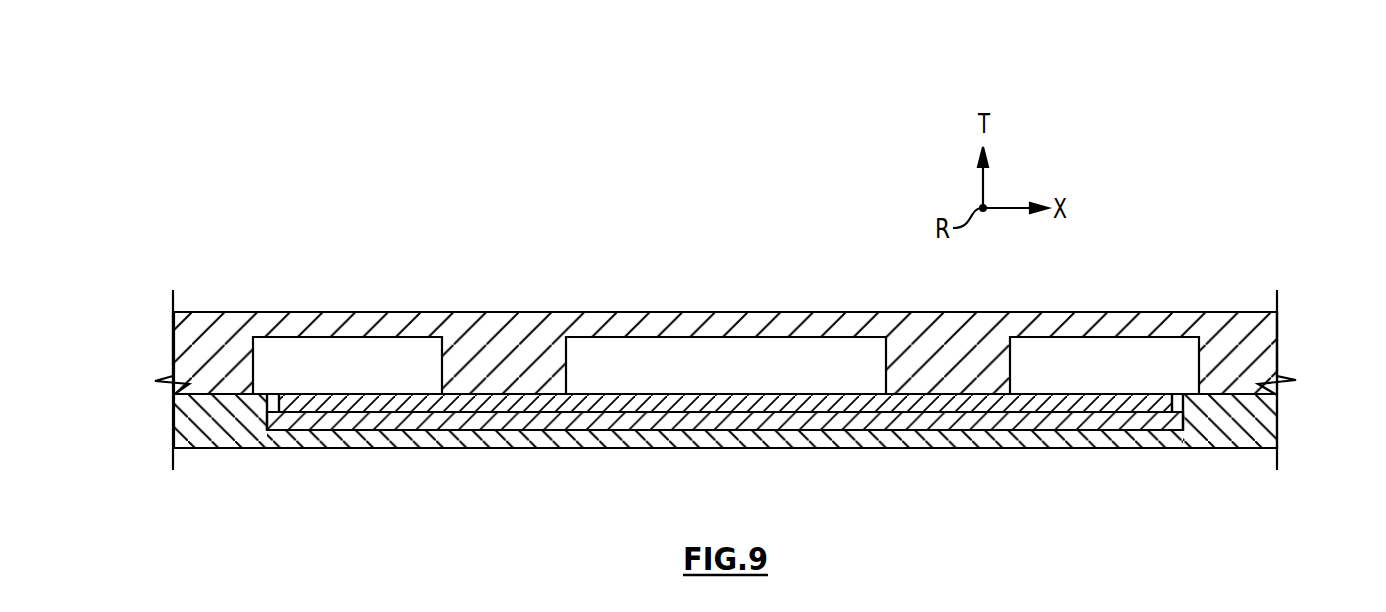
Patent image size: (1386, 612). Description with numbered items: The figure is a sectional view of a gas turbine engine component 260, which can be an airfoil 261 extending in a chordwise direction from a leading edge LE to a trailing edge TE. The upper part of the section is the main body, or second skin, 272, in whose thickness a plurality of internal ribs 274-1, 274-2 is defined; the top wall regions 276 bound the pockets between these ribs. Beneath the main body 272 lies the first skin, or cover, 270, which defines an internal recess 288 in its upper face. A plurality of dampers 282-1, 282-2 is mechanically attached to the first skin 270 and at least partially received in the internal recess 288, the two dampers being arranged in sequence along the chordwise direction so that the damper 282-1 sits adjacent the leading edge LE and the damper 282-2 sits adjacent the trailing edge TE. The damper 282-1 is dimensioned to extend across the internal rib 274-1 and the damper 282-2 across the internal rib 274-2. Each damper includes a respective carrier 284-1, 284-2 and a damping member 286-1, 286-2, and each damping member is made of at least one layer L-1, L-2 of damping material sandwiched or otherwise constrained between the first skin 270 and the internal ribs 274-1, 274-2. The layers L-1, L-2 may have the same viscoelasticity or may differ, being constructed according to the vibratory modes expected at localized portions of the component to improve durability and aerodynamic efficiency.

The component 260 is at (234, 93).
The airfoil 261 is at (602, 276).
The first skin 270 is at (187, 430).
The main body 272 is at (196, 312).
The internal rib 274-1 is at (550, 382).
The internal rib 274-2 is at (995, 382).
The cavity top wall 276 is at (383, 338).
The damper 282-1 is at (365, 395).
The damper 282-2 is at (1126, 397).
The carrier 284-1 is at (313, 395).
The carrier 284-2 is at (1152, 403).
The damping member 286-1 is at (297, 418).
The damping member 286-2 is at (1155, 418).
The internal recess 288 is at (697, 418).
The layer L-1 is at (546, 420).
The layer L-2 is at (915, 420).
The leading edge LE is at (173, 342).
The trailing edge TE is at (1277, 343).